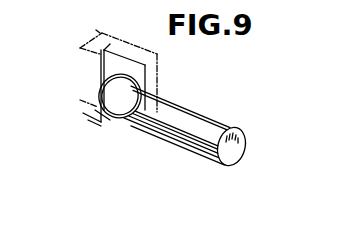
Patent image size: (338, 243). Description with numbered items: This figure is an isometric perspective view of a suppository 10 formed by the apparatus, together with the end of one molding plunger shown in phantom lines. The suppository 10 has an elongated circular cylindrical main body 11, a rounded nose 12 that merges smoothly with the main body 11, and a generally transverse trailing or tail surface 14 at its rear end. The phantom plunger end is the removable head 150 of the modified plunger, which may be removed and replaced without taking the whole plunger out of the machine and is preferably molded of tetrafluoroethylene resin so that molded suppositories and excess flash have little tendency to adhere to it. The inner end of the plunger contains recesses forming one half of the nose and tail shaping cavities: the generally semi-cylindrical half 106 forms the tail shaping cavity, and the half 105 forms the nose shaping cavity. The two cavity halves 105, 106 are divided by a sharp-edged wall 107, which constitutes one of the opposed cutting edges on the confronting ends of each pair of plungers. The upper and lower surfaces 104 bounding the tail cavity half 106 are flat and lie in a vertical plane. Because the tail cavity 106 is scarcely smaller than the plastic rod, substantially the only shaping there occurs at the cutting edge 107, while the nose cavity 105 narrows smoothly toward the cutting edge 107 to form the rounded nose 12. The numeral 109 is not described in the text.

The suppository 10 is at (192, 131).
The elongated circular cylindrical main body 11 is at (147, 132).
The rounded nose 12 is at (97, 83).
The transverse trailing or tail surface 14 is at (233, 158).
The upper and lower surfaces 104 is at (80, 50).
The nose shaping cavity half 105 is at (130, 122).
The tail shaping cavity half 106 is at (81, 101).
The sharp-edged wall 107 is at (98, 70).
The base flange 109 is at (89, 122).
The removable head or inner end 150 is at (97, 31).